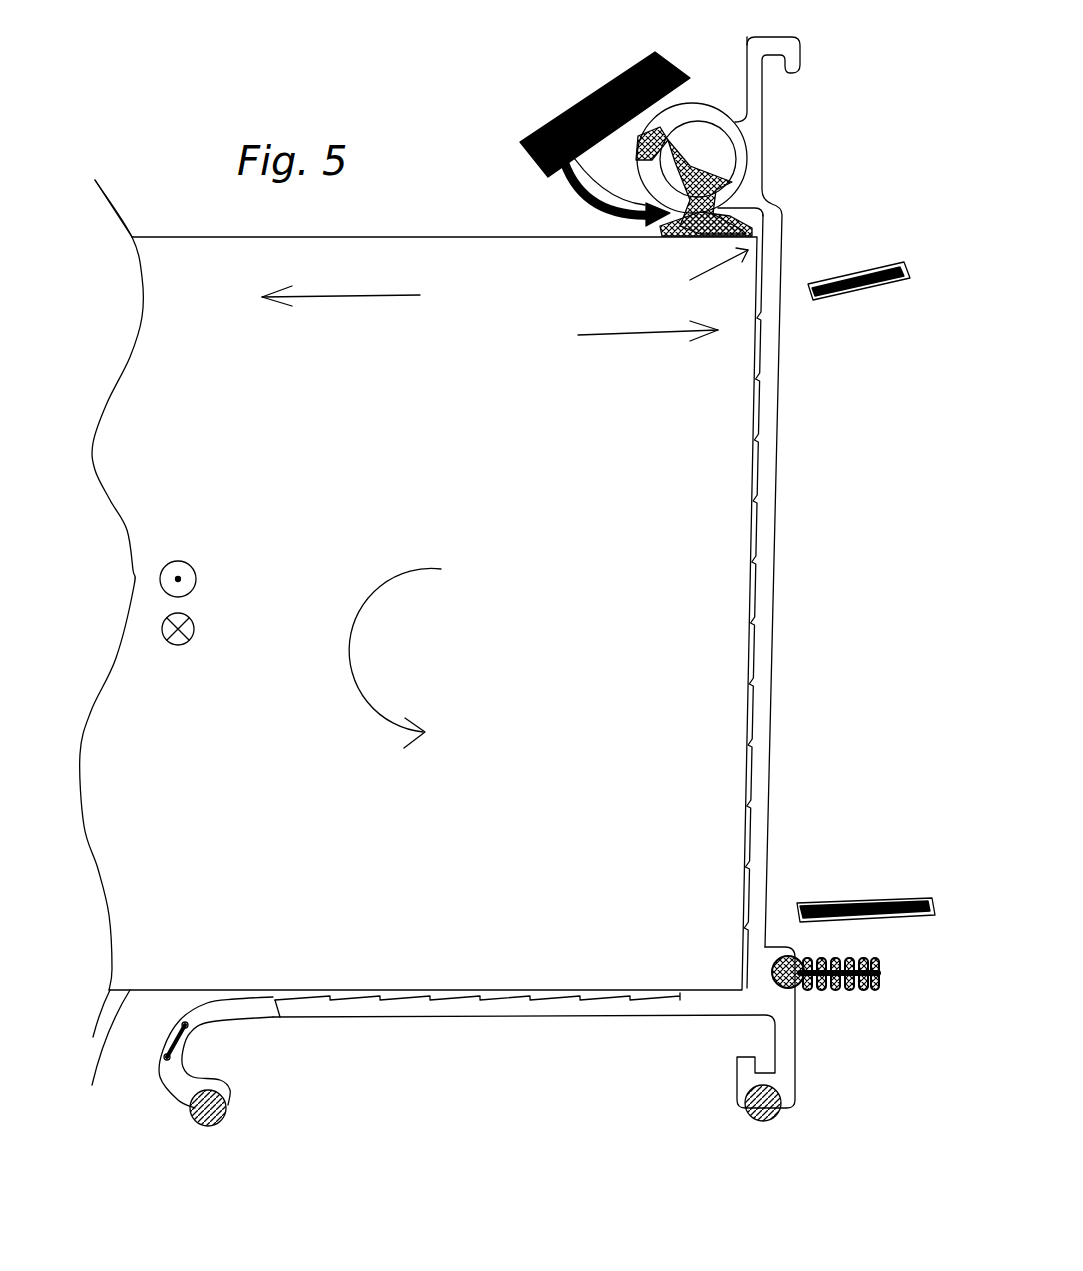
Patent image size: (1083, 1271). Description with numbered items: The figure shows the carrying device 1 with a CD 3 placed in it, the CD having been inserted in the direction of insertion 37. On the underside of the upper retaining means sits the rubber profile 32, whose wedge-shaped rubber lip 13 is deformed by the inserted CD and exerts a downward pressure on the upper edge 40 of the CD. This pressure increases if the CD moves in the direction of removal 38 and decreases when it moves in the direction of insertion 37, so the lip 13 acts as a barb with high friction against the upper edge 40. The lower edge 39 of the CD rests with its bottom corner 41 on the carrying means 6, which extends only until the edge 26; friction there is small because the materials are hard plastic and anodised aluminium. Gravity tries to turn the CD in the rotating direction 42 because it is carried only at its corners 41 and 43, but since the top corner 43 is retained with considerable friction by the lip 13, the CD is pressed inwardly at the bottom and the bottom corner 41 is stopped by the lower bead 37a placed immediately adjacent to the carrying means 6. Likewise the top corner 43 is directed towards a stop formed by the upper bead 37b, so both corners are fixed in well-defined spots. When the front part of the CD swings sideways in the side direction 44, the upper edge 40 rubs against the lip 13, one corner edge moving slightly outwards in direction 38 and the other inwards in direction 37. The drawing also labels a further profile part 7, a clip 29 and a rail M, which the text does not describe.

The carrying device 1 is at (627, 40).
The CD 3 is at (440, 247).
The carrying means 6 is at (703, 993).
The profile web 7 is at (384, 1010).
The rubber lip 13 is at (743, 228).
The edge 26 is at (676, 996).
The clip 29 is at (297, 1007).
The rubber profile 32 is at (700, 168).
The direction of insertion 37 is at (640, 333).
The lower bead 37a is at (750, 926).
The upper bead 37b is at (762, 262).
The direction of removal 38 is at (335, 298).
The lower edge 39 is at (100, 1059).
The upper edge 40 is at (174, 237).
The bottom corner 41 is at (716, 966).
The rotating direction 42 is at (341, 647).
The top corner 43 is at (701, 276).
The side direction 44 is at (197, 582).
The mounting rail M is at (757, 856).